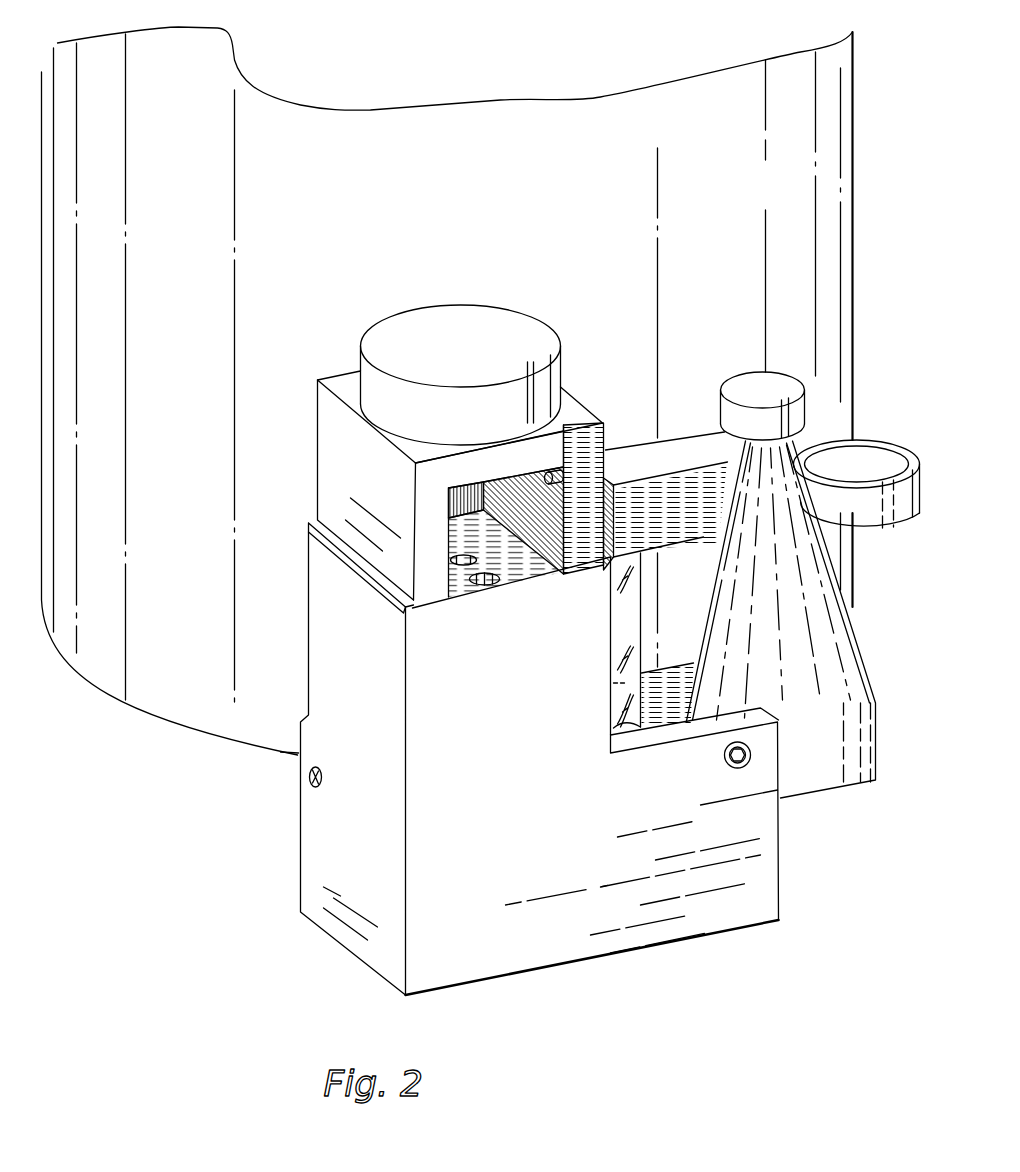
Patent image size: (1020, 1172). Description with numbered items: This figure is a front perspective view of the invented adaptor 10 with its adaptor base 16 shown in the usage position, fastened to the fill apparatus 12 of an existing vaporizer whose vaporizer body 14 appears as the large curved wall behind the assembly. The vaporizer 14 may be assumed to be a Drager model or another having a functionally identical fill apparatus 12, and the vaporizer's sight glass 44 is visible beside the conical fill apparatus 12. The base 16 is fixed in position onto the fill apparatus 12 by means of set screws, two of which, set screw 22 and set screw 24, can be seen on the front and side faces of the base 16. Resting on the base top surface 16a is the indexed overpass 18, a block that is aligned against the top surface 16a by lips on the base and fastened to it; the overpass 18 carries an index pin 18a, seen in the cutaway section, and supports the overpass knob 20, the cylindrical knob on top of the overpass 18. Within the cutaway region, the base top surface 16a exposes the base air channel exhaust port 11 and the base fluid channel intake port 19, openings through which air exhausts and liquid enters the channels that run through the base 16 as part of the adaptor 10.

The adaptor 10 is at (710, 966).
The base air channel exhaust port 11 is at (455, 546).
The fill apparatus 12 is at (860, 796).
The vaporizer body 14 is at (582, 207).
The adaptor base 16 is at (482, 758).
The base top surface 16a is at (461, 588).
The indexed overpass 18 is at (368, 475).
The index pin 18a is at (550, 470).
The base fluid channel intake port 19 is at (497, 579).
The overpass knob 20 is at (477, 362).
The set screw 22 is at (735, 766).
The set screw 24 is at (309, 790).
The sight glass 44 is at (642, 607).